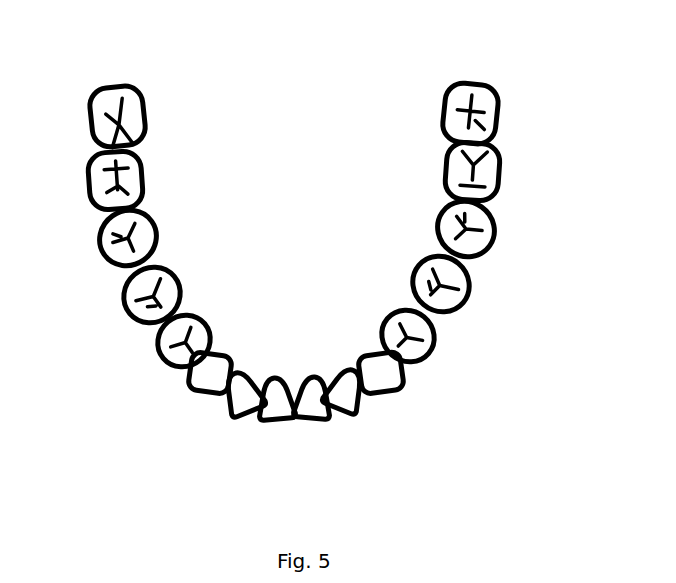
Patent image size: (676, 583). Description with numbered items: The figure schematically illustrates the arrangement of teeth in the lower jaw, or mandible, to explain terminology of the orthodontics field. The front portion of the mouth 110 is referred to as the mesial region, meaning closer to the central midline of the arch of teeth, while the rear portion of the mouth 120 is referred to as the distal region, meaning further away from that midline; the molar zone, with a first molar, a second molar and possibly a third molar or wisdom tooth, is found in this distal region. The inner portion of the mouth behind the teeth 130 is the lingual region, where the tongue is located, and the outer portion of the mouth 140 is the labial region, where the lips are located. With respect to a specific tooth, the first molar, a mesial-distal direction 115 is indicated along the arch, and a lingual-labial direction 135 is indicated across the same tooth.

The front portion of the mouth 110 is at (325, 278).
The mesial-distal direction 115 is at (74, 213).
The rear portion of the mouth 120 is at (512, 238).
The inner portion of the mouth behind the teeth 130 is at (287, 195).
The lingual-labial direction 135 is at (78, 254).
The outer portion of the mouth 140 is at (133, 373).